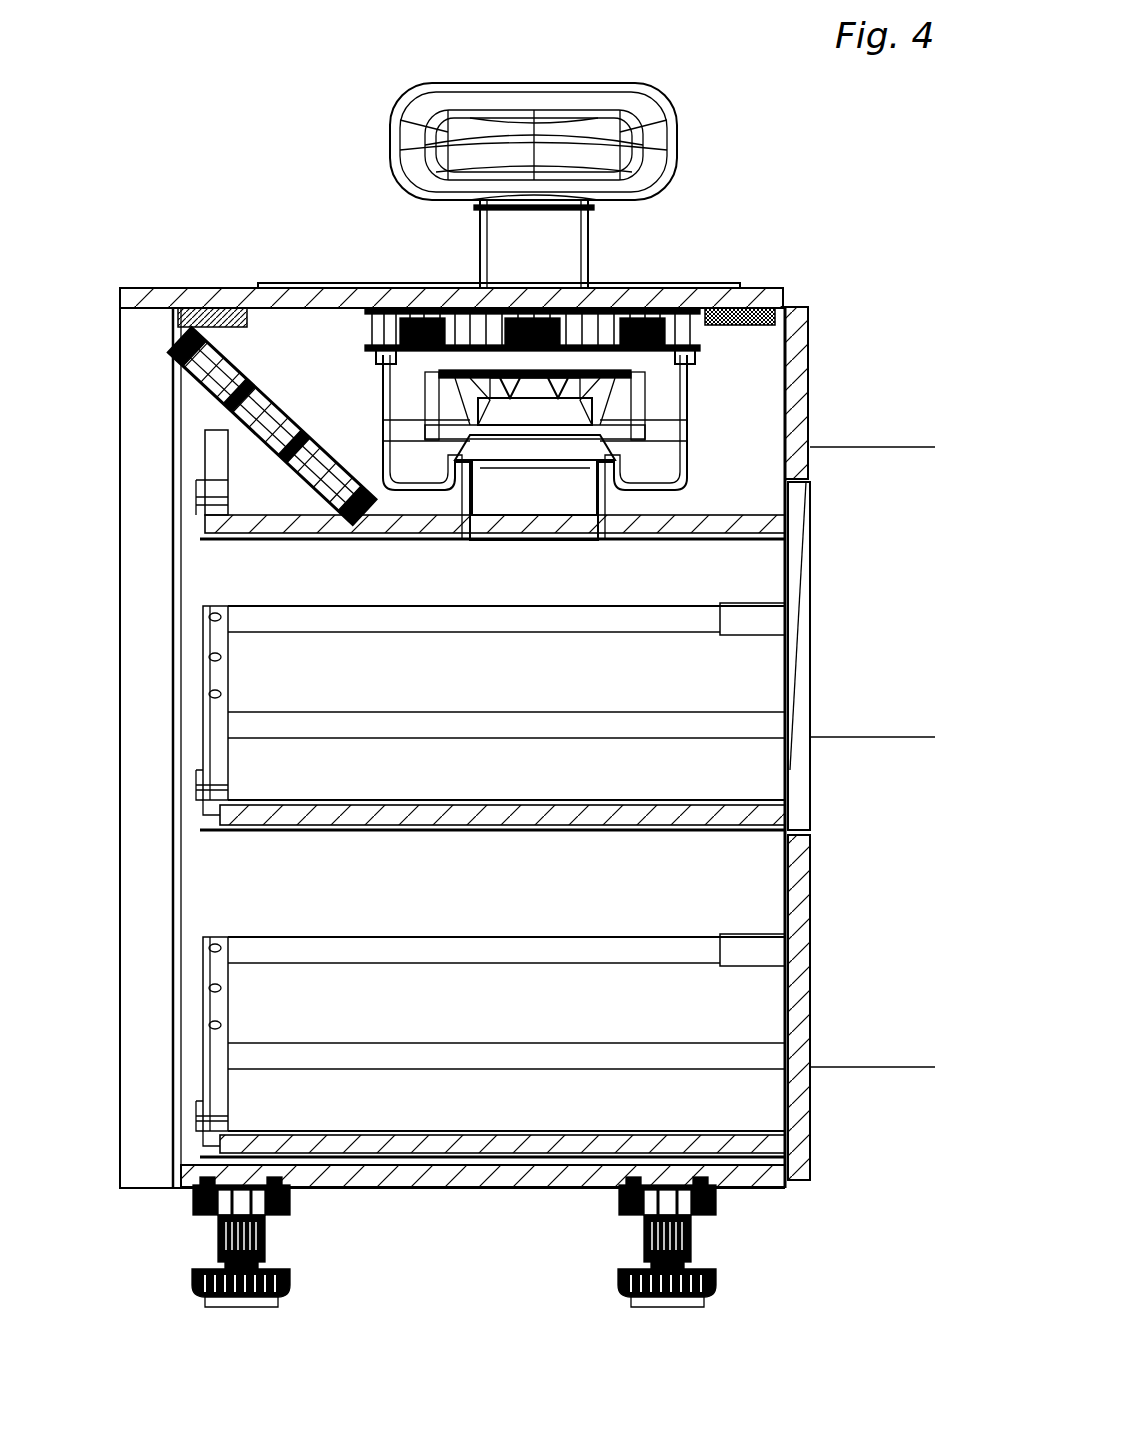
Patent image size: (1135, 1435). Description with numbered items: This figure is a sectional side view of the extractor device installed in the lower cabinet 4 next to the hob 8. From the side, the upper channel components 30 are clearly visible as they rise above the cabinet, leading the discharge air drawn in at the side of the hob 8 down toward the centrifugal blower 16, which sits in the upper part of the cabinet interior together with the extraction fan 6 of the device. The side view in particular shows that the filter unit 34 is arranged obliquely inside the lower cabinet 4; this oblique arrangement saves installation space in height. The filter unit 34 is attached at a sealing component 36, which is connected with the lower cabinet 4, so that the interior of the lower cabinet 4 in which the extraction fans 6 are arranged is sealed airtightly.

The lower cabinet 4 is at (805, 540).
The extraction fan 6 is at (830, 413).
The hob 8 is at (335, 285).
The centrifugal blower 16 is at (612, 405).
The upper channel components 30 is at (588, 253).
The filter unit 34 is at (232, 415).
The sealing component 36 is at (222, 316).